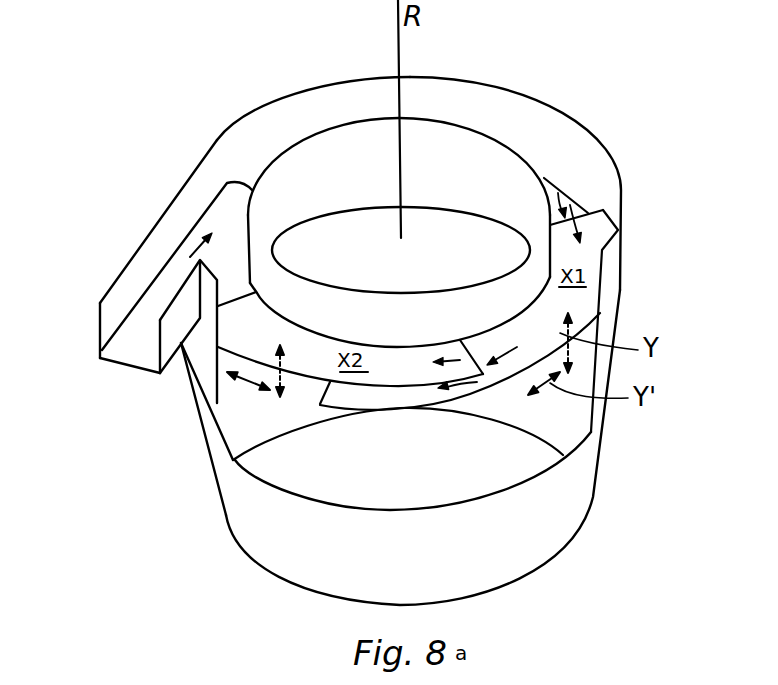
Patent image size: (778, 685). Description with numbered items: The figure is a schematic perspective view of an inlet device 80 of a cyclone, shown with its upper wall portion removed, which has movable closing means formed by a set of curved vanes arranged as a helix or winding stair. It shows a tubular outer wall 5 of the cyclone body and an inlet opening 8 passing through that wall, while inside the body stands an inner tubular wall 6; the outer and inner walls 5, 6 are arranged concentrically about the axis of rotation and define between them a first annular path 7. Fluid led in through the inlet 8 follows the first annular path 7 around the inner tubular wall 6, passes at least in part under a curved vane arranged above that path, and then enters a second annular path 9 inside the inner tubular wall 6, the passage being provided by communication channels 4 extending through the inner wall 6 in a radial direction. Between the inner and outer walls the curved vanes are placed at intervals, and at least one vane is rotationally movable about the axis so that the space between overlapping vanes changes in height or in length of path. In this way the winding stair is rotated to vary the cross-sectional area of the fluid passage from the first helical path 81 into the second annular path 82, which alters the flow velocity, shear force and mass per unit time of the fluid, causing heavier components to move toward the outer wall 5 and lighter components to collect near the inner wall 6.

The inlet device 80 is at (180, 131).
The outer tubular wall 5 is at (614, 172).
The inner tubular wall 6 is at (515, 145).
The first annular path 7 is at (573, 175).
The second annular path 9 is at (424, 237).
The inlet opening 8 is at (133, 337).
The first helical path 81 is at (333, 394).
The second annular path 82 is at (300, 462).
The communication channel 4 is at (397, 393).